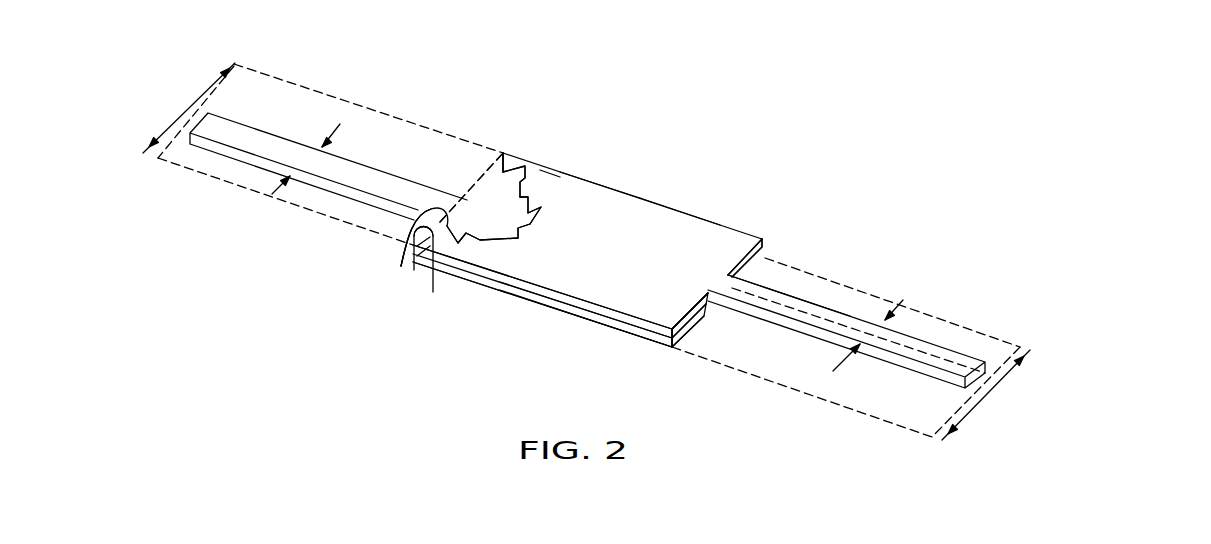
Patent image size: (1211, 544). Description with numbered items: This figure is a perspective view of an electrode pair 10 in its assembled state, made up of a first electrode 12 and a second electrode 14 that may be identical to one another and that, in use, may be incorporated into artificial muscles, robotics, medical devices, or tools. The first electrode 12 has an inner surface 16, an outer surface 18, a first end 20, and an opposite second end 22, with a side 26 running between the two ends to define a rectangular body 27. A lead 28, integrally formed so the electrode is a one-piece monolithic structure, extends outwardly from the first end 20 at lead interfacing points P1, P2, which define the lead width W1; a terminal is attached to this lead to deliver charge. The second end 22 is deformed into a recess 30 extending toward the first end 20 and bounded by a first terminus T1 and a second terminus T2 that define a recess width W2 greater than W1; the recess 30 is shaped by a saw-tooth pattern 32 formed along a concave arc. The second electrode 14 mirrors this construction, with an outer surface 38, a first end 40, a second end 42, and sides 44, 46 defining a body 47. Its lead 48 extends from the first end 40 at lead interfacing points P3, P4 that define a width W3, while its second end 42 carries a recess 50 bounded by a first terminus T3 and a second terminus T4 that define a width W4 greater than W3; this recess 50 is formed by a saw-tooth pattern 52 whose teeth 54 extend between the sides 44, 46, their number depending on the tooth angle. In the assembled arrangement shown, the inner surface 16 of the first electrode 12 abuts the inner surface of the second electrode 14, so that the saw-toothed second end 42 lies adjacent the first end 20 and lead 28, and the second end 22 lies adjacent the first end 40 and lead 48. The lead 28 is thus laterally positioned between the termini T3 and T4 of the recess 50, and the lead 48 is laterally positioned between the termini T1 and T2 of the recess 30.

The electrode pair 10 is at (438, 121).
The first electrode 12 is at (390, 251).
The second electrode 14 is at (733, 220).
The inner surface 16 is at (493, 195).
The outer surface 18 is at (492, 292).
The first end 20 is at (414, 250).
The second end 22 is at (674, 349).
The side 26 is at (590, 318).
The body 27 is at (540, 308).
The lead 28 is at (240, 132).
The recess 30 is at (690, 337).
The saw-tooth pattern 32 is at (752, 277).
The outer surface 38 is at (605, 200).
The first end 40 is at (688, 318).
The second end 42 is at (537, 183).
The side 44 is at (672, 206).
The side 46 is at (628, 318).
The body 47 is at (563, 190).
The lead 48 is at (933, 338).
The recess 50 is at (483, 238).
The saw-tooth pattern 52 is at (538, 233).
The teeth 54 is at (543, 216).
The lead interfacing point P1 is at (414, 241).
The lead interfacing point P2 is at (470, 201).
The lead interfacing point P3 is at (729, 280).
The lead interfacing point P4 is at (707, 301).
The first terminus T1 is at (672, 346).
The second terminus T2 is at (766, 256).
The first terminus T3 is at (501, 151).
The second terminus T4 is at (433, 236).
The width of the lead W1 is at (308, 157).
The width of the recess W2 is at (985, 398).
The width of the lead W3 is at (872, 330).
The width of the recess W4 is at (193, 105).